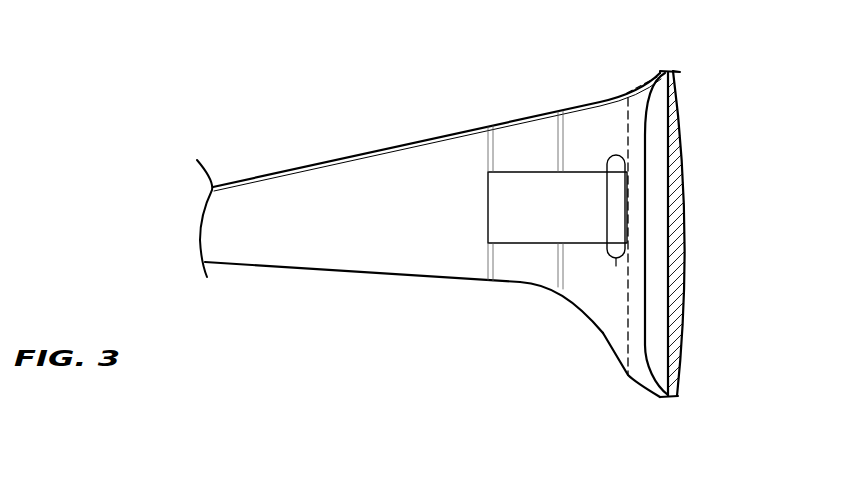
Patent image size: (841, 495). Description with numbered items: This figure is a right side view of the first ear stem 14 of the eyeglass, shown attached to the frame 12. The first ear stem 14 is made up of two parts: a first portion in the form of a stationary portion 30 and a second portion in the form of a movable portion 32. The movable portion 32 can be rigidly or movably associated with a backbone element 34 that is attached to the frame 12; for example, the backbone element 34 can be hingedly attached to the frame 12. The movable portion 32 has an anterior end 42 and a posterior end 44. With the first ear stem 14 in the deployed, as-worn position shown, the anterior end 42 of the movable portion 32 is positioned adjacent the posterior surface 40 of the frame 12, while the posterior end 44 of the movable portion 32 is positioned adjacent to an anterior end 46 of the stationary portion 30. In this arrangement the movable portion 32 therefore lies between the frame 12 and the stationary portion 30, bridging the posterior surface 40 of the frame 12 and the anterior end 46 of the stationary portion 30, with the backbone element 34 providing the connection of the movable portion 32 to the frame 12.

The frame 12 is at (602, 333).
The first ear stem 14 is at (414, 128).
The stationary portion 30 is at (330, 272).
The movable portion 32 is at (523, 283).
The backbone element 34 is at (588, 211).
The posterior surface 40 is at (560, 140).
The anterior end 42 is at (558, 270).
The posterior end 44 is at (490, 263).
The anterior end 46 is at (488, 157).